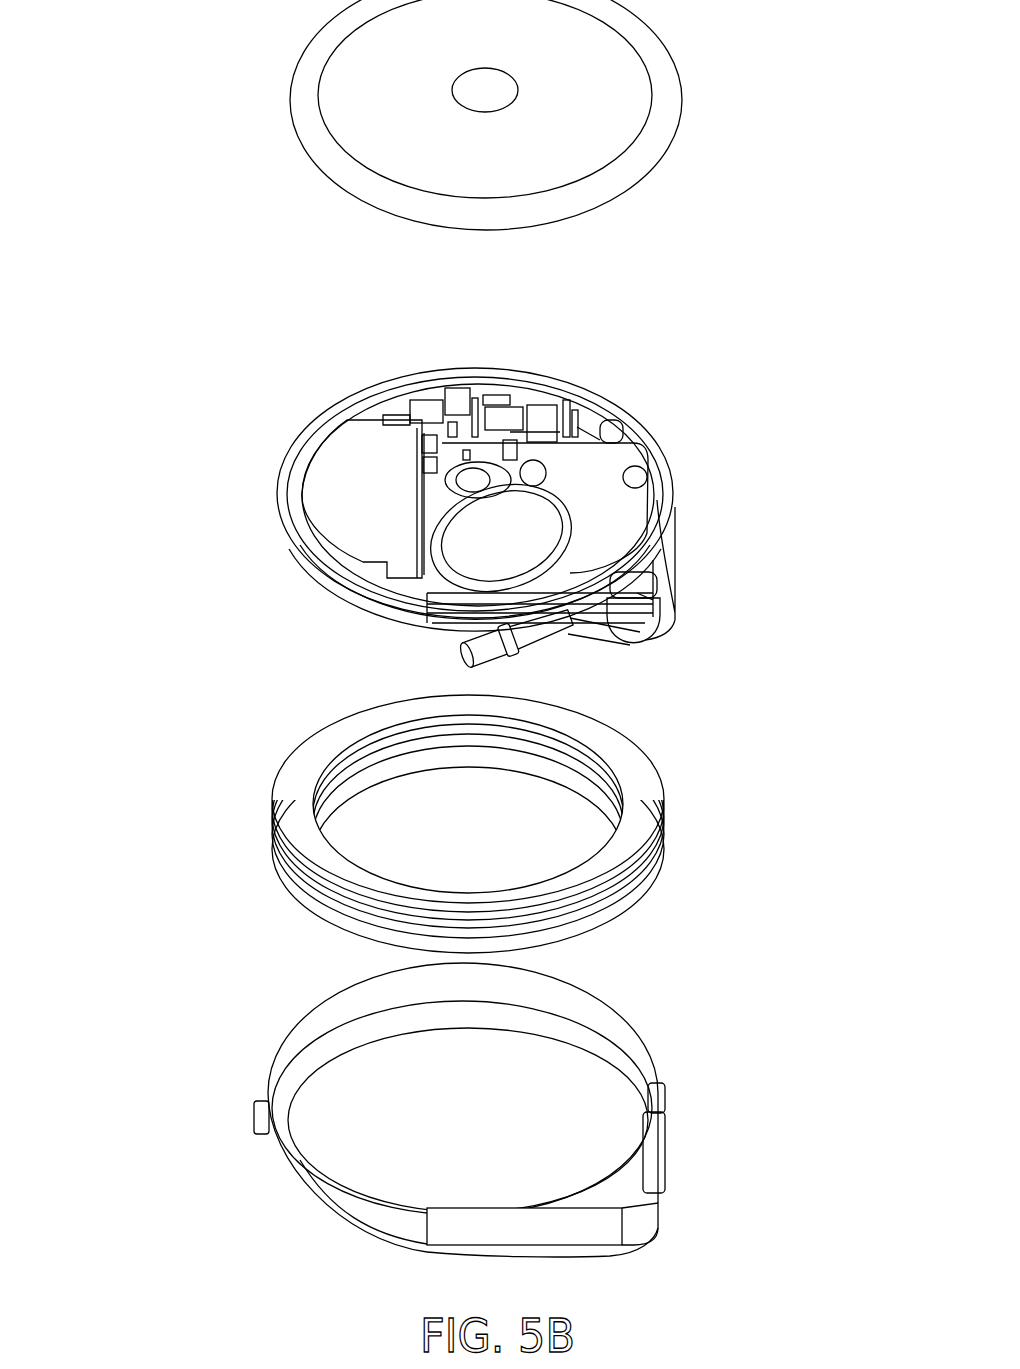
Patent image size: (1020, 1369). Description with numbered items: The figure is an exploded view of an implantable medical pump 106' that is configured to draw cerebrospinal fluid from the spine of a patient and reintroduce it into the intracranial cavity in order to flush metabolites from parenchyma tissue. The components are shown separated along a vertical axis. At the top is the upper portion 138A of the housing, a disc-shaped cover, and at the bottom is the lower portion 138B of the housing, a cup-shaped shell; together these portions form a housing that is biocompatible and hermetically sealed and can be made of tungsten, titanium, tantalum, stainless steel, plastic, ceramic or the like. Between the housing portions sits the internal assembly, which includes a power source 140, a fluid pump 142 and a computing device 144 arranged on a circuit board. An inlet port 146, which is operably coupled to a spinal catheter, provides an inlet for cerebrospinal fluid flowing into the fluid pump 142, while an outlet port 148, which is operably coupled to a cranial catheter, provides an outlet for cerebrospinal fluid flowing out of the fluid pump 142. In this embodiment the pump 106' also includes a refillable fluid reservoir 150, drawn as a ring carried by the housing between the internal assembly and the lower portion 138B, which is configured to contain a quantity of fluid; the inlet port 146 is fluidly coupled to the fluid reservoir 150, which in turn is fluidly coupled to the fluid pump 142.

The implantable medical pump 106' is at (385, 428).
The upper portion of housing 138A is at (598, 64).
The lower portion of housing 138B is at (657, 1232).
The power source 140 is at (325, 467).
The fluid pump 142 is at (477, 550).
The computing device 144 is at (497, 398).
The inlet port 146 is at (470, 480).
The outlet port 148 is at (462, 655).
The refillable fluid reservoir 150 is at (638, 808).